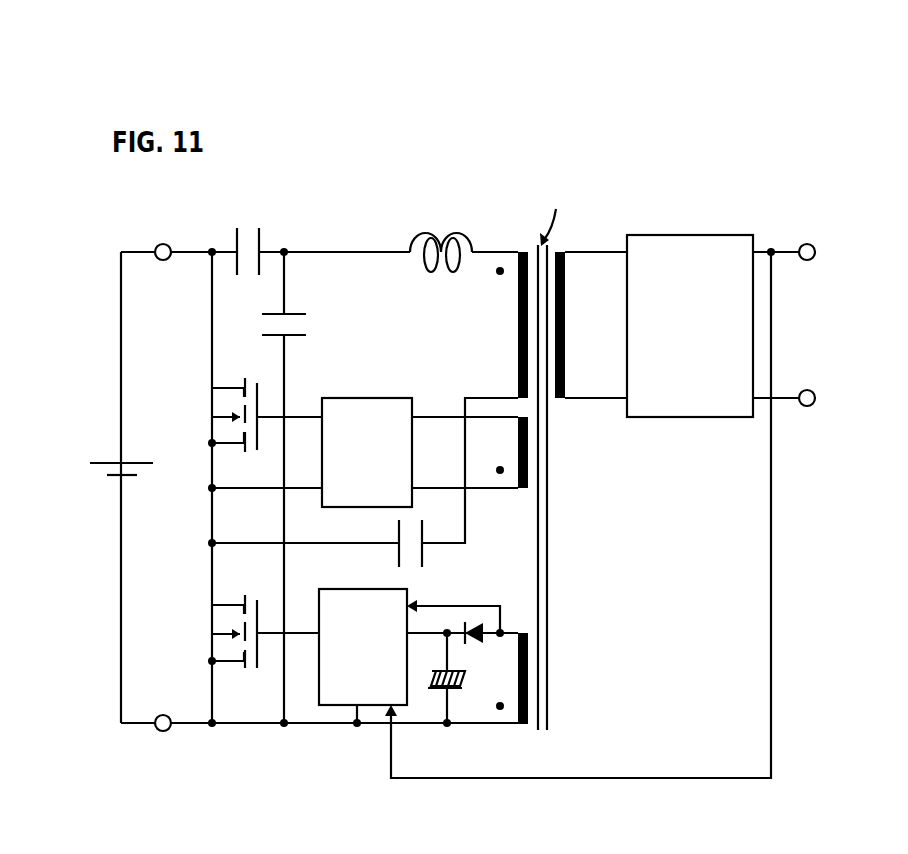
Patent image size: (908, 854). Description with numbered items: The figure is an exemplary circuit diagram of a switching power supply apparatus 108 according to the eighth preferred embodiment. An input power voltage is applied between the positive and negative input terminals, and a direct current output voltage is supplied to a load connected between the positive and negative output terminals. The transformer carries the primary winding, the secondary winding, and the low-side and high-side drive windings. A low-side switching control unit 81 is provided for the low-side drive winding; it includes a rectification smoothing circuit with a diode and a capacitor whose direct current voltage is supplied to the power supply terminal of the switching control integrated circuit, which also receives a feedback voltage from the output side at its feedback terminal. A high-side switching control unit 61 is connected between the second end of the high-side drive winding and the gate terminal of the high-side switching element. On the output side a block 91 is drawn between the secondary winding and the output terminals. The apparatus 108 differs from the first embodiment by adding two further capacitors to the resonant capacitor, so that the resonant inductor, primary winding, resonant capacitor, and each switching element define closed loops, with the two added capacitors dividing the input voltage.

The switching power supply apparatus 108 is at (841, 151).
The high-side switching control unit 61 is at (363, 397).
The low-side switching control unit 81 is at (319, 705).
The rectifying and smoothing circuit 91 is at (690, 234).